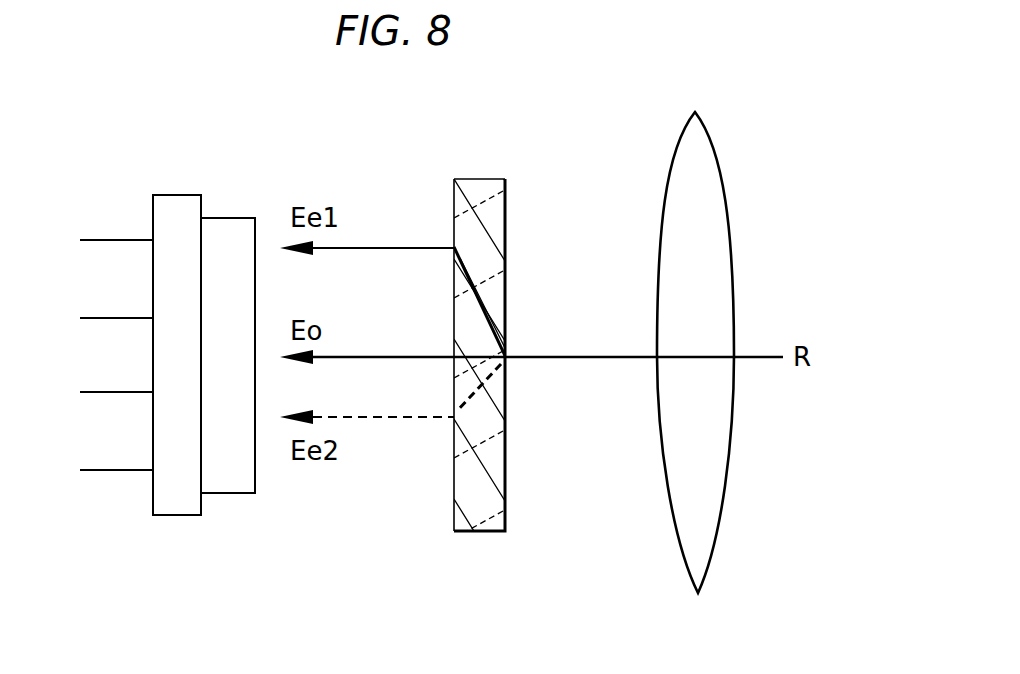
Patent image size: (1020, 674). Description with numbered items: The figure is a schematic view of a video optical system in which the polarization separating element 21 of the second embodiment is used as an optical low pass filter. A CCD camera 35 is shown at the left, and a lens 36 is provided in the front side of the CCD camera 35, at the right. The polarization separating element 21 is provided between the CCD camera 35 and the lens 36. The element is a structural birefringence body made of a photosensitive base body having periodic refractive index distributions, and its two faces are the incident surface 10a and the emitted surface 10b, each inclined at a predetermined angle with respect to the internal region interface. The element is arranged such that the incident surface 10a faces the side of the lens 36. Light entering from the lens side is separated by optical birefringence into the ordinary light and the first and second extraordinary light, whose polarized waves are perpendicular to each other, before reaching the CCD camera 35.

The CCD camera 35 is at (179, 188).
The polarization separating element 21 is at (484, 340).
The incident surface 10a is at (506, 513).
The emitted surface 10b is at (454, 495).
The lens 36 is at (695, 104).